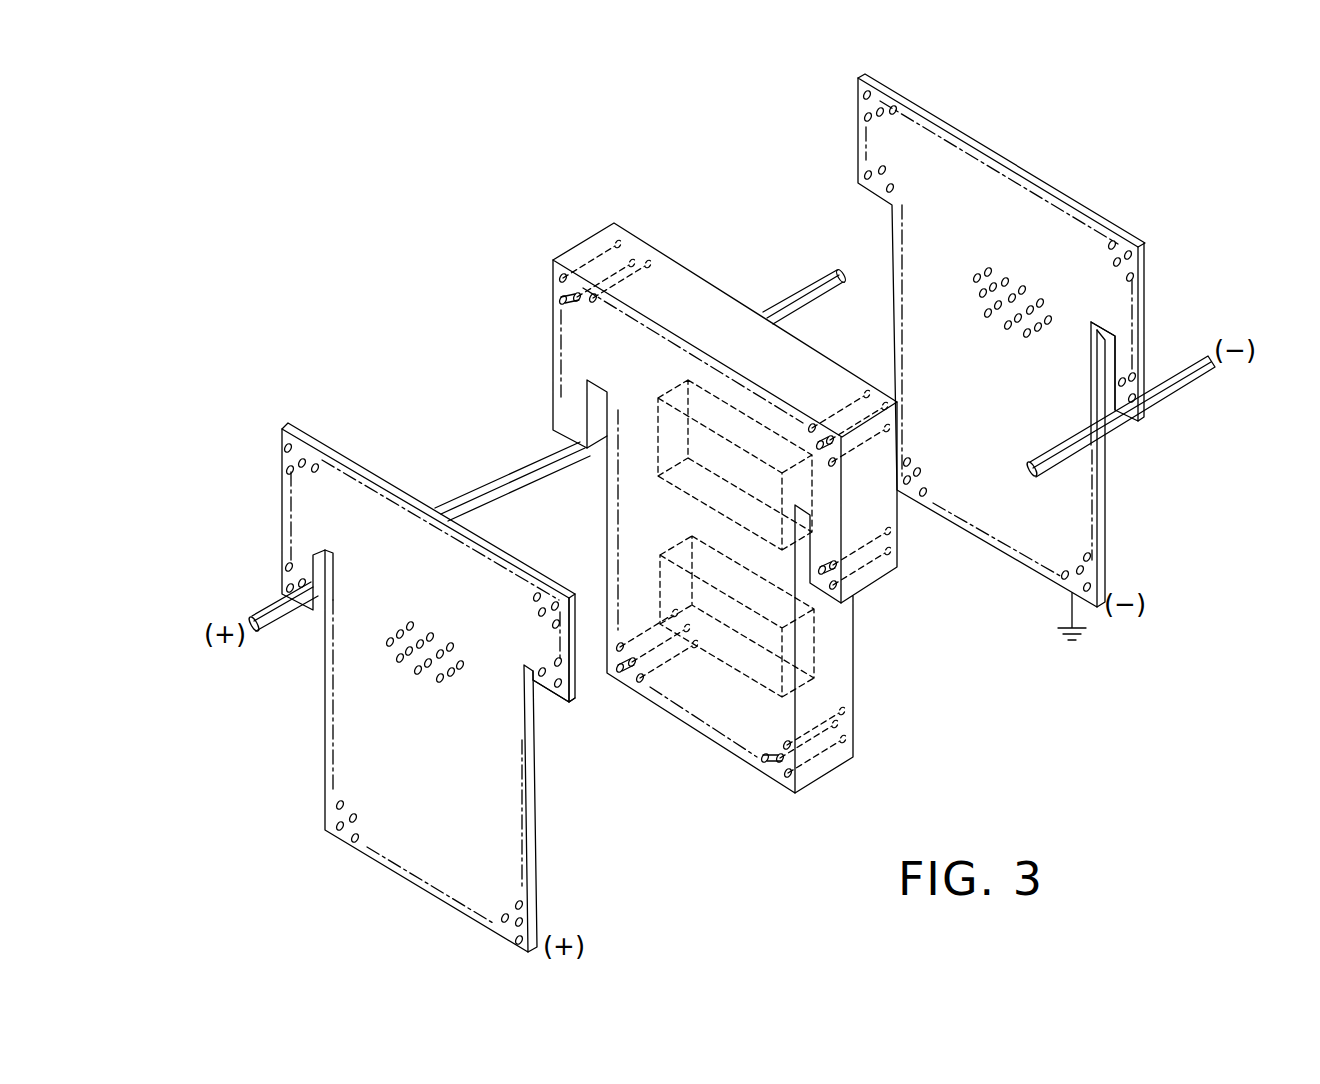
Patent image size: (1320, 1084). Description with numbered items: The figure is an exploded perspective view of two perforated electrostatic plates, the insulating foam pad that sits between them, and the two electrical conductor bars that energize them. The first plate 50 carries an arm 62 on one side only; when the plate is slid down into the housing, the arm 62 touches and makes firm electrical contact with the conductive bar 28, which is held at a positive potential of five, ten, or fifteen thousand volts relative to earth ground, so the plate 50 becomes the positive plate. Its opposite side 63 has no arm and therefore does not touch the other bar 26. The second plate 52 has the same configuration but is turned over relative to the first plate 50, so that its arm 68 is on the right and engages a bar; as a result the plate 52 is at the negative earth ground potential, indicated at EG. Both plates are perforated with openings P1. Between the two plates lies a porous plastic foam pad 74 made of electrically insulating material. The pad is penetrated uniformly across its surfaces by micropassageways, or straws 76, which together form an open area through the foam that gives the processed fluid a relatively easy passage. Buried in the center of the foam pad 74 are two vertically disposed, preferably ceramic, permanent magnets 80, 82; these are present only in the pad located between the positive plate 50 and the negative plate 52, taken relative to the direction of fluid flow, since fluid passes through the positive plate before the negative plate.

The plate 50 is at (518, 872).
The plate 52 is at (1027, 538).
The arm 62 is at (312, 610).
The opposite side 63 is at (556, 648).
The conductive bar 28 is at (517, 487).
The conductive bar 26 is at (1170, 400).
The arm 68 is at (1128, 348).
The porous plastic foam pad 74 is at (823, 770).
The straws 76 is at (562, 298).
The permanent magnet 80 is at (748, 420).
The permanent magnet 82 is at (822, 653).
The perforations P1 is at (287, 567).
The earth ground EG is at (1086, 640).